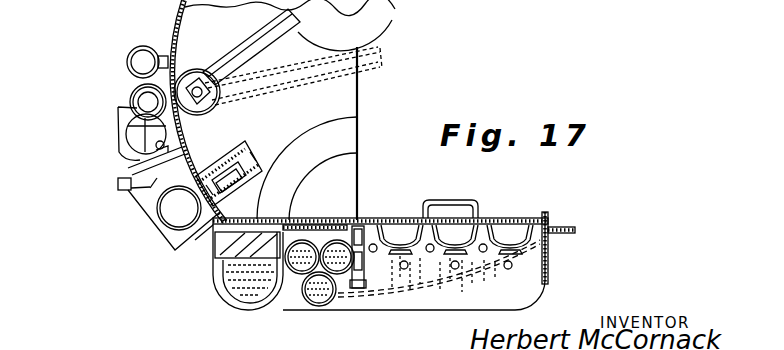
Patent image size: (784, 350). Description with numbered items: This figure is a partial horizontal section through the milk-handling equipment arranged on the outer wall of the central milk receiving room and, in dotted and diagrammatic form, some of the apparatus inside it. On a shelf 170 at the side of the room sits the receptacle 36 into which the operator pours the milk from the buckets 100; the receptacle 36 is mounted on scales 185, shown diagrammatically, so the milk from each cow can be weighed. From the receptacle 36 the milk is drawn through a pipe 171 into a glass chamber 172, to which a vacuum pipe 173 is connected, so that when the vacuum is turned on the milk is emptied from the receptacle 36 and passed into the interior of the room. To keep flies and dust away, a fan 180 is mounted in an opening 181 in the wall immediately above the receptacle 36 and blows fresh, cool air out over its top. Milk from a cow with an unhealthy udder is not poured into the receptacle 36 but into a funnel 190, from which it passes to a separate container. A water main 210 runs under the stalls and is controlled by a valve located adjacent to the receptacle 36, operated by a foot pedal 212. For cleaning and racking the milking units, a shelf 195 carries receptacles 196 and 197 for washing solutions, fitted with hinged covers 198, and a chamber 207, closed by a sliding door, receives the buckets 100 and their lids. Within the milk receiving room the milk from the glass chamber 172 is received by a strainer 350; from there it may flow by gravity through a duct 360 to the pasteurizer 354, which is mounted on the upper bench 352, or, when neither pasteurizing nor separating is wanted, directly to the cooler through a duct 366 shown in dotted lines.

The water main 210 is at (143, 0).
The duct 360 is at (237, 48).
The strainer 350 is at (200, 72).
The pasteurizer 354 is at (396, 20).
The upper bench 352 is at (360, 83).
The duct 366 is at (335, 133).
The funnel 190 is at (127, 68).
The glass chamber 172 is at (130, 100).
The vacuum pipe 173 is at (177, 140).
The fan 180 is at (262, 176).
The scales 185 is at (150, 172).
The foot pedal 212 is at (124, 192).
The pipe 171 is at (147, 216).
The receptacle 36 is at (170, 223).
The shelf 170 is at (172, 244).
The opening 181 is at (200, 243).
The hinged covers 198 is at (303, 238).
The chamber 207 is at (448, 193).
The bucket 100 is at (503, 227).
The receptacle 196 is at (257, 293).
The receptacle 197 is at (320, 298).
The shelf 195 is at (450, 302).